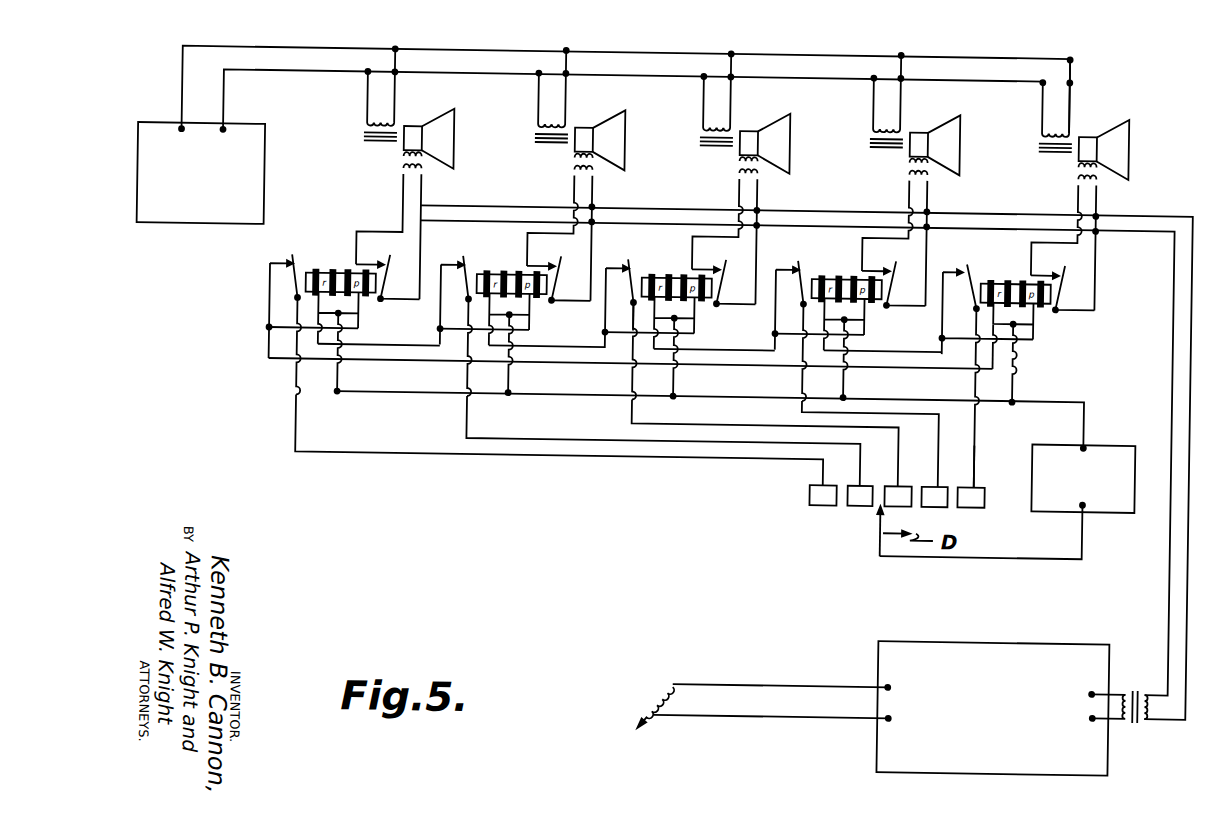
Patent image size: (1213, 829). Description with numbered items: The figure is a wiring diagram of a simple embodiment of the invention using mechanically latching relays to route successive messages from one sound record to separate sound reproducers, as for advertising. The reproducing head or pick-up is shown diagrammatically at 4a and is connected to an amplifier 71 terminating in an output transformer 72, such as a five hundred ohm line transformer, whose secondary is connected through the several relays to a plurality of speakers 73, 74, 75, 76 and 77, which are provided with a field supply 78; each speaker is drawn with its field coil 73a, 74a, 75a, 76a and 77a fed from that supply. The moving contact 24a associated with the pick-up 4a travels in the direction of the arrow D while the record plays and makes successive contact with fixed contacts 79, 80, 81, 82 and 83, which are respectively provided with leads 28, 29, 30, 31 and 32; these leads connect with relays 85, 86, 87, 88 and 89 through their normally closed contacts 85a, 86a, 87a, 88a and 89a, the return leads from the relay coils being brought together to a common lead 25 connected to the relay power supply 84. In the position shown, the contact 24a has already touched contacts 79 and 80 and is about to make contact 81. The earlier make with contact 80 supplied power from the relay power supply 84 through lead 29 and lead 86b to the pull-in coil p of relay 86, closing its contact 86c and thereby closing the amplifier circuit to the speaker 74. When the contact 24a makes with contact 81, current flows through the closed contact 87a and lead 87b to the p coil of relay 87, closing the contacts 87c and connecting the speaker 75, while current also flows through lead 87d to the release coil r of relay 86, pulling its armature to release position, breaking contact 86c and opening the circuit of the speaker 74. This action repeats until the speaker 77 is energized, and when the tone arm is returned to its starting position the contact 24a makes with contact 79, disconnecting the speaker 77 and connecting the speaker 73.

The pick-up 4a is at (688, 674).
The moving contact 24a is at (878, 522).
The return conductor 25 is at (932, 552).
The lead 28 is at (781, 459).
The lead 29 is at (861, 446).
The lead 30 is at (899, 437).
The lead 31 is at (936, 425).
The lead 32 is at (974, 434).
The amplifier 71 is at (1113, 758).
The output transformer 72 is at (1143, 713).
The speaker 73 is at (428, 138).
The speaker field coil 73a is at (390, 126).
The speaker 74 is at (599, 140).
The speaker field coil 74a is at (561, 125).
The speaker 75 is at (764, 143).
The speaker field coil 75a is at (726, 126).
The speaker 76 is at (934, 145).
The speaker field coil 76a is at (896, 125).
The speaker 77 is at (1103, 149).
The speaker field coil 77a is at (1065, 127).
The field supply 78 is at (261, 192).
The fixed contact 79 is at (822, 495).
The fixed contact 80 is at (859, 496).
The fixed contact 81 is at (897, 496).
The fixed contact 82 is at (934, 497).
The fixed contact 83 is at (970, 497).
The relay power supply 84 is at (1105, 497).
The relay 85 is at (325, 270).
The contact 85a is at (286, 262).
The relay 86 is at (503, 269).
The contact 86a is at (465, 260).
The lead 86b is at (466, 312).
The contact 86c is at (553, 262).
The relay 87 is at (670, 270).
The contact 87a is at (629, 258).
The lead 87b is at (631, 308).
The contacts 87c is at (722, 264).
The lead 87d is at (601, 333).
The relay 88 is at (825, 269).
The contact 88a is at (796, 258).
The relay 89 is at (1000, 272).
The contact 89a is at (964, 260).